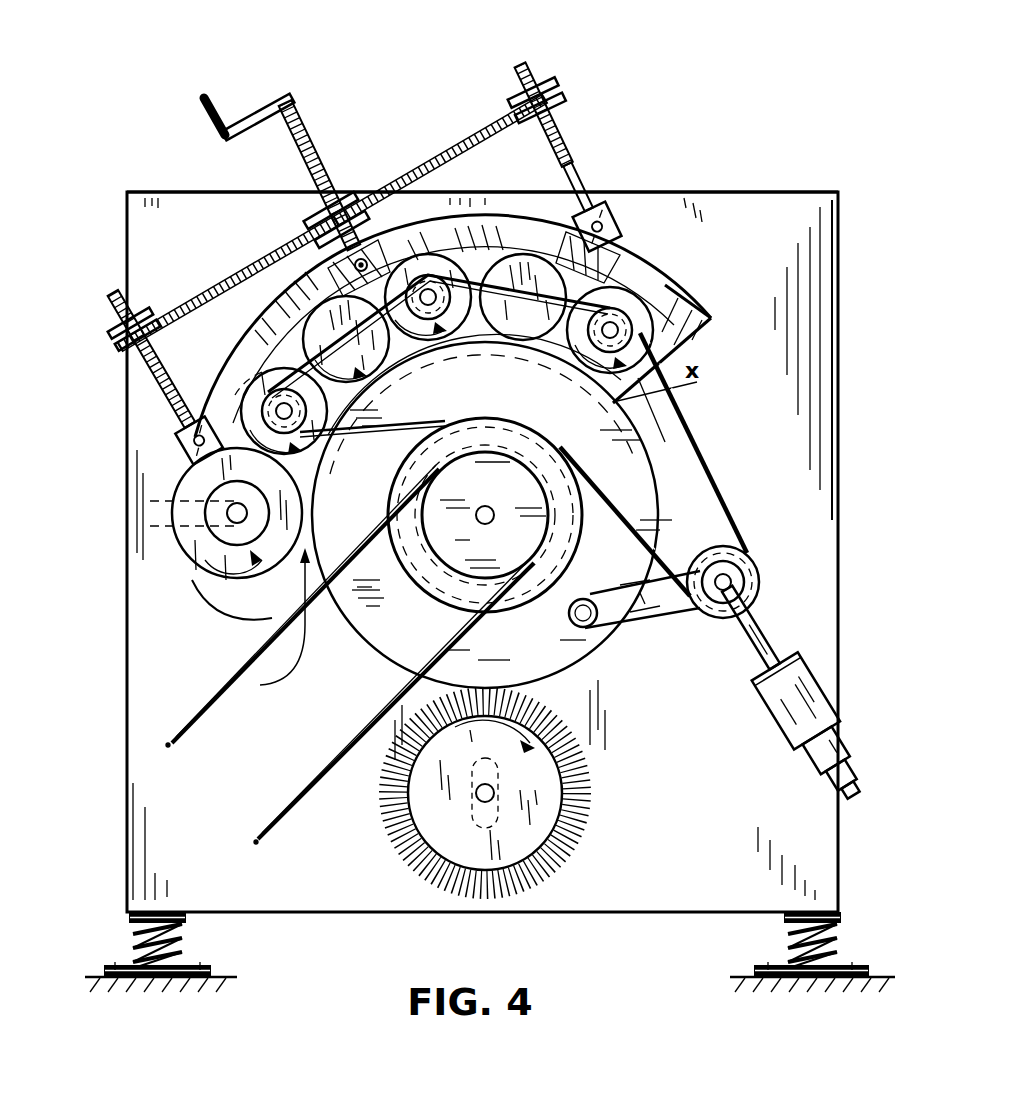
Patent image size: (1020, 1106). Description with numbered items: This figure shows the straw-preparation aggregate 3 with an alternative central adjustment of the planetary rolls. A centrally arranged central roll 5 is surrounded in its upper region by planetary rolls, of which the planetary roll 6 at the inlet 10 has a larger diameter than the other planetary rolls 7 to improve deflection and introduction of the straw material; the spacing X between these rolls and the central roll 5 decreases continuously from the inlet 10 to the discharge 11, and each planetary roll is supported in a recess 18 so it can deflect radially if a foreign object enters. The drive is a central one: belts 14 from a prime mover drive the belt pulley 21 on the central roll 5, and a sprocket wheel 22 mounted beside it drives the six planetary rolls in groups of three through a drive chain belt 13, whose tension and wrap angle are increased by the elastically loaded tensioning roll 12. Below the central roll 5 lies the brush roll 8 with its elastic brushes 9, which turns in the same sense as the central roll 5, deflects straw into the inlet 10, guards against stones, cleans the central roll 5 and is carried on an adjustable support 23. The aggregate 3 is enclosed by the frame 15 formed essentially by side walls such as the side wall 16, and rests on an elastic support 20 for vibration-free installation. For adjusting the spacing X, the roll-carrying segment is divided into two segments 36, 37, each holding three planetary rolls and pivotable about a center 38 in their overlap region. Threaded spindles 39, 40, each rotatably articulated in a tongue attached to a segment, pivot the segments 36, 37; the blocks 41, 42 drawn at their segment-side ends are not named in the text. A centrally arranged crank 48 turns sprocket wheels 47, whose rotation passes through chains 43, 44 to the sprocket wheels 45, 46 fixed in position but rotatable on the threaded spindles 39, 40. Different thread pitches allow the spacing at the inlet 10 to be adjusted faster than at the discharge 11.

The aggregate 3 is at (845, 283).
The central roll 5 is at (402, 662).
The planetary roll 6 is at (185, 490).
The planetary rolls 7 is at (245, 404).
The brush roll 8 is at (440, 845).
The brushes 9 is at (575, 850).
The inlet 10 is at (262, 604).
The discharge 11 is at (728, 486).
The tensioning roll 12 is at (760, 588).
The drive chain belt 13 is at (693, 433).
The belts 14 is at (165, 737).
The frame 15 is at (738, 192).
The side wall 16 is at (780, 222).
The recess 18 is at (412, 240).
The elastic support 20 is at (168, 985).
The belt pulley 21 is at (530, 468).
The sprocket wheel 22 is at (525, 600).
The support 23 is at (474, 781).
The segment 36 is at (633, 268).
The segment 37 is at (200, 596).
The center 38 is at (350, 262).
The threaded spindle 39 is at (112, 296).
The threaded spindle 40 is at (515, 72).
The pivot block 41 is at (170, 437).
The pivot block 42 is at (607, 208).
The chain 43 is at (190, 308).
The chain 44 is at (433, 150).
The sprocket wheel 45 is at (120, 343).
The sprocket wheel 46 is at (560, 87).
The sprocket wheels 47 is at (312, 230).
The crank 48 is at (265, 112).